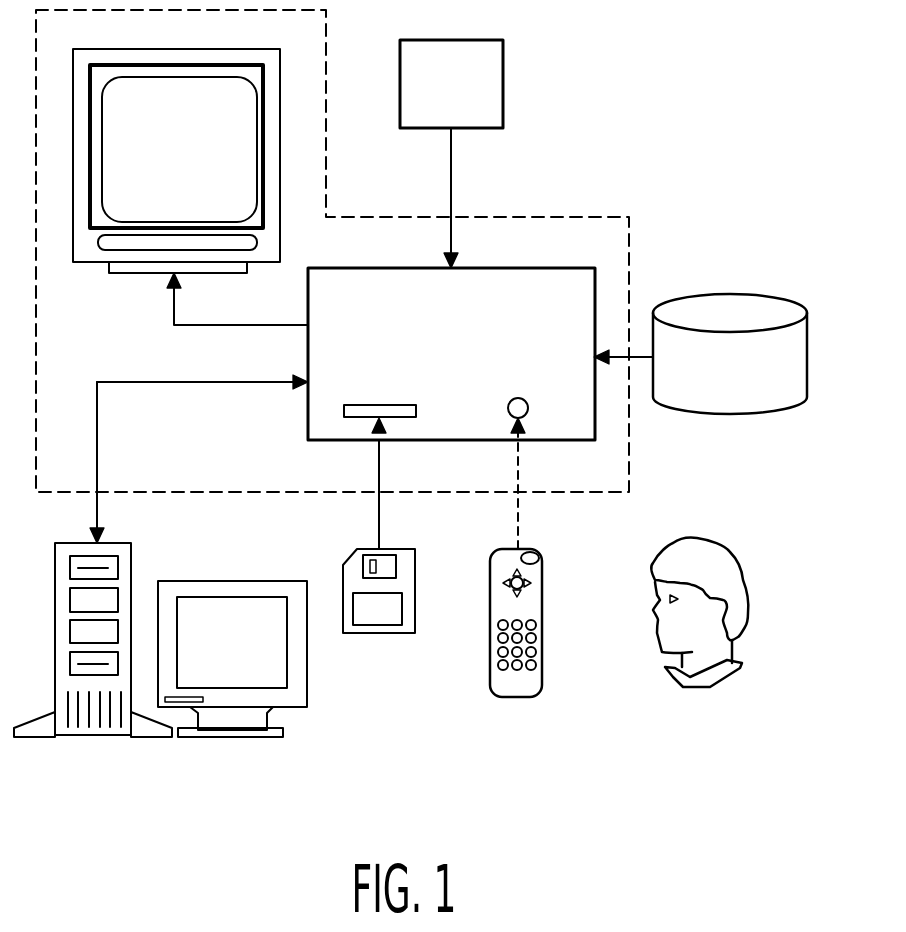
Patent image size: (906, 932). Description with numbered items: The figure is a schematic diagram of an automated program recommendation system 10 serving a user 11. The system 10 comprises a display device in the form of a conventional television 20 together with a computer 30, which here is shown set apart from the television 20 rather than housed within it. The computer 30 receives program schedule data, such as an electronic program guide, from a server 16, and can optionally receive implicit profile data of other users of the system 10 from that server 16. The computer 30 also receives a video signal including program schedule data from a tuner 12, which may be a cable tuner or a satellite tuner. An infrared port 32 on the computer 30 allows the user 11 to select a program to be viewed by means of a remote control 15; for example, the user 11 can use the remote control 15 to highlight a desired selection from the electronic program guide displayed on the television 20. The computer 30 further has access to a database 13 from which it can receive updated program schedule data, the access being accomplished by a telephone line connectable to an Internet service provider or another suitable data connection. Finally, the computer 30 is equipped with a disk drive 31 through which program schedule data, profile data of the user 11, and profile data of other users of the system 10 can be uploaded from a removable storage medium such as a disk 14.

The automated program recommendation system 10 is at (578, 217).
The user 11 is at (727, 680).
The tuner 12 is at (440, 115).
The database 13 is at (743, 403).
The disk 14 is at (382, 633).
The remote control 15 is at (517, 697).
The server 16 is at (244, 680).
The television 20 is at (162, 183).
The computer 30 is at (442, 368).
The disk drive 31 is at (345, 419).
The infrared port 32 is at (525, 415).